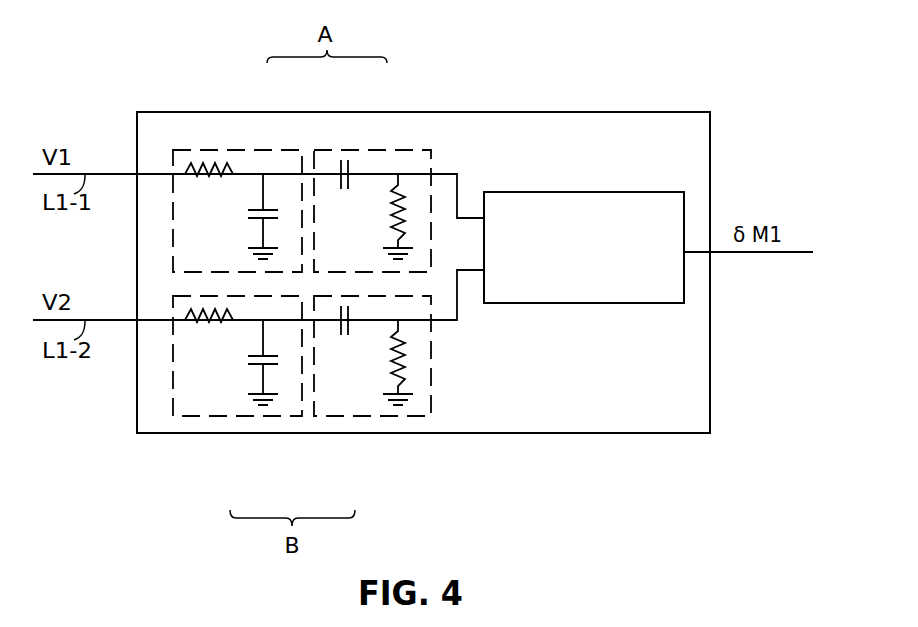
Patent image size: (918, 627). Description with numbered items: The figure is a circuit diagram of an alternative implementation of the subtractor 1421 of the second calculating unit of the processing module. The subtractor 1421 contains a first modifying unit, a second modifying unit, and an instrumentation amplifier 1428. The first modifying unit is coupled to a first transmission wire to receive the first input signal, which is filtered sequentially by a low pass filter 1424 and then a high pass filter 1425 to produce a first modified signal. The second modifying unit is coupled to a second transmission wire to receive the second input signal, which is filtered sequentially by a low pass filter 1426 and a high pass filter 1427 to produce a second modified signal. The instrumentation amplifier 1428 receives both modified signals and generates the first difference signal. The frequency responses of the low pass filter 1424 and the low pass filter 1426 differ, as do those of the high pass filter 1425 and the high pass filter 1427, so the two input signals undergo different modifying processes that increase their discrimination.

The subtractor 1421 is at (537, 112).
The low pass filter 1424 is at (233, 150).
The high pass filter 1425 is at (378, 150).
The low pass filter 1426 is at (242, 416).
The high pass filter 1427 is at (382, 416).
The instrumentation amplifier 1428 is at (577, 303).